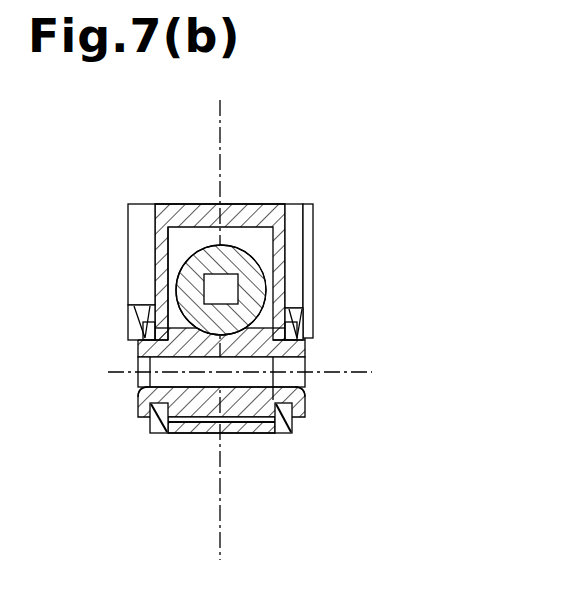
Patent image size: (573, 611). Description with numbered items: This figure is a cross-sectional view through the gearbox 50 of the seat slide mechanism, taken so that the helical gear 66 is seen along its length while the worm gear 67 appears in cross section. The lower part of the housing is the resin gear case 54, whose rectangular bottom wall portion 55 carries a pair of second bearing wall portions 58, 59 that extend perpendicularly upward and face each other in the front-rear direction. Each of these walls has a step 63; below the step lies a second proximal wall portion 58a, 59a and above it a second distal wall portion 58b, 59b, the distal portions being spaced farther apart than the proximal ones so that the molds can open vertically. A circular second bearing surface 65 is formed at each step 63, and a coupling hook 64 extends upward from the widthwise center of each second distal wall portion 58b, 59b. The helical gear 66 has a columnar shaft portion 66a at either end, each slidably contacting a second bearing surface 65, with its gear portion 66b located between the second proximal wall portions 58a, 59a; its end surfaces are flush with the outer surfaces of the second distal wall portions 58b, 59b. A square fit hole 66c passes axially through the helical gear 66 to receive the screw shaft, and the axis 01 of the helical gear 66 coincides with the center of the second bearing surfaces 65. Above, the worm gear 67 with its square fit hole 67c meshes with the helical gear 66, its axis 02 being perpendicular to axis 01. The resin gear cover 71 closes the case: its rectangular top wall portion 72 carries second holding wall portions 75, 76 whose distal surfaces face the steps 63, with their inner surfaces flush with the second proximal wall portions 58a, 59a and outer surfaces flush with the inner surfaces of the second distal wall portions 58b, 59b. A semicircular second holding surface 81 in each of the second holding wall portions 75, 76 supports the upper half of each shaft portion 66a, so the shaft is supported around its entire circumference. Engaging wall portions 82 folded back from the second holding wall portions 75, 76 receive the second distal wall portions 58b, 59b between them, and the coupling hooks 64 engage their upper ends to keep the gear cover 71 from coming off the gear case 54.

The gearbox 50 is at (352, 118).
The axis of the helical gear 01 is at (372, 372).
The axis of the worm gear 02 is at (262, 262).
The gear case 54 is at (176, 433).
The bottom wall portion 55 is at (245, 433).
The second bearing wall portion 58 is at (150, 413).
The second proximal wall portion 58a is at (152, 430).
The second distal wall portion 58b is at (142, 343).
The second bearing wall portion 59 is at (292, 411).
The second proximal wall portion 59a is at (292, 426).
The second distal wall portion 59b is at (315, 325).
The step 63 is at (300, 362).
The coupling hook 64 is at (142, 312).
The second bearing surface 65 is at (140, 390).
The helical gear 66 is at (262, 414).
The shaft portion 66a is at (170, 430).
The gear portion 66b is at (183, 421).
The fit hole 66c is at (140, 358).
The worm gear 67 is at (277, 224).
The fit hole 67c is at (160, 245).
The gear cover 71 is at (192, 204).
The top wall portion 72 is at (231, 246).
The second holding wall portion 75 is at (153, 250).
The second holding wall portion 76 is at (310, 235).
The second holding surface 81 is at (142, 333).
The engaging wall portion 82 is at (137, 325).